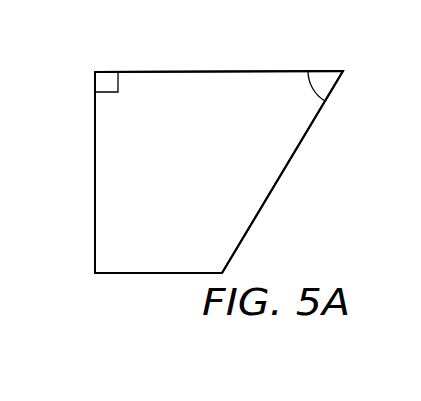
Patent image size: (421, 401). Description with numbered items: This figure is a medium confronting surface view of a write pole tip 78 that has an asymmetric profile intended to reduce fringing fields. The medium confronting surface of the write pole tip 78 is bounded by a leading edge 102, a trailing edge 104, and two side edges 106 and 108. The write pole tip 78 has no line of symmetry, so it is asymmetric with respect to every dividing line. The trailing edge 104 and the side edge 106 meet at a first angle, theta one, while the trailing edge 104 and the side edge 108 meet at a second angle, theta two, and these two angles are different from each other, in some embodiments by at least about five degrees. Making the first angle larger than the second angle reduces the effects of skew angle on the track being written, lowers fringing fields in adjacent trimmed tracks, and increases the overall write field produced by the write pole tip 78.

The write pole tip 78 is at (198, 170).
The leading edge 102 is at (151, 275).
The trailing edge 104 is at (215, 71).
The side edge 106 is at (95, 168).
The side edge 108 is at (272, 188).